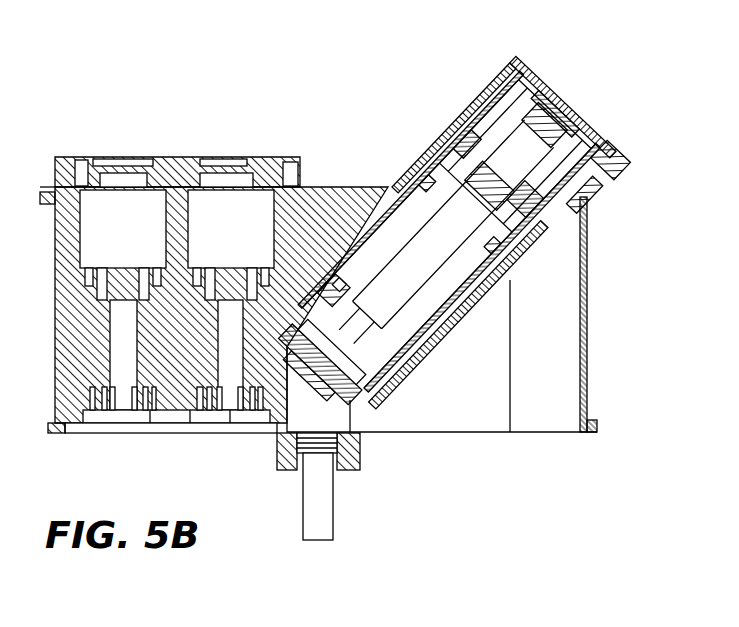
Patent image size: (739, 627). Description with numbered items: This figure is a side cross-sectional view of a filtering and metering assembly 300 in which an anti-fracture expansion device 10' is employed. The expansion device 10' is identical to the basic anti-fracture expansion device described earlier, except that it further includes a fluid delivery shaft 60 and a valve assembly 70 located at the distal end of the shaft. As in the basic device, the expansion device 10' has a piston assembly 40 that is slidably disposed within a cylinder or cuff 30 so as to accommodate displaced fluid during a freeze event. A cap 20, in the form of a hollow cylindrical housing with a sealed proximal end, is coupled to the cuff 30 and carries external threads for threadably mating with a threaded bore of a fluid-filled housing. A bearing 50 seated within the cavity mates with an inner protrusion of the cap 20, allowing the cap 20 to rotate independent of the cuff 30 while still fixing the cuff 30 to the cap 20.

The filtering and metering assembly 300 is at (160, 85).
The anti-fracture expansion device 10' is at (506, 259).
The cap 20 is at (617, 170).
The cuff 30 is at (600, 203).
The piston assembly 40 is at (520, 195).
The bearing 50 is at (580, 127).
The fluid delivery shaft 60 is at (423, 287).
The valve assembly 70 is at (350, 393).